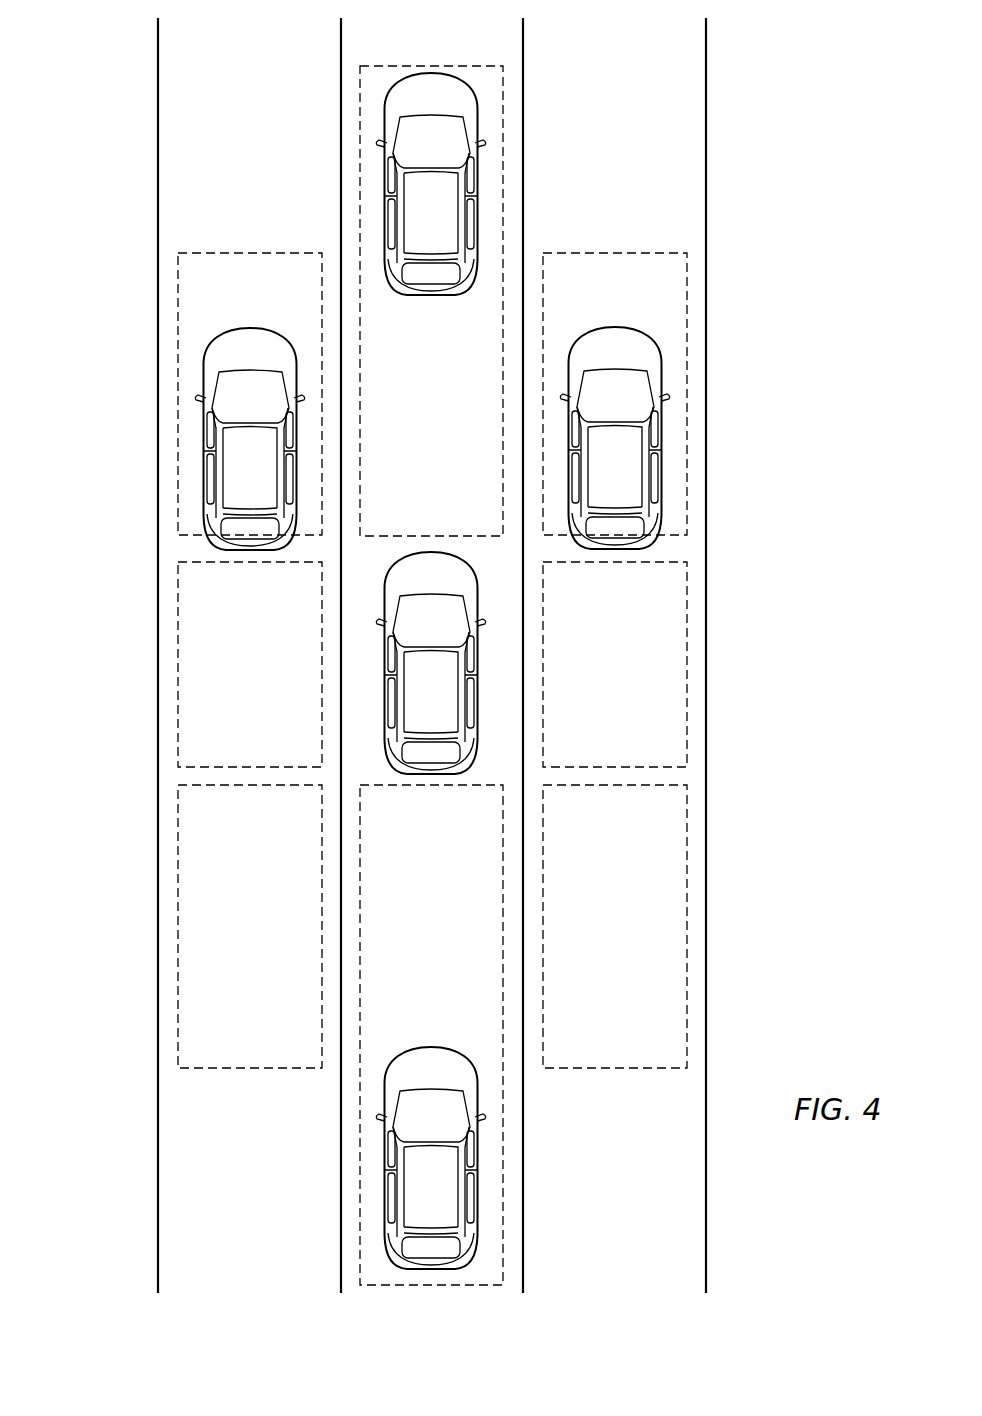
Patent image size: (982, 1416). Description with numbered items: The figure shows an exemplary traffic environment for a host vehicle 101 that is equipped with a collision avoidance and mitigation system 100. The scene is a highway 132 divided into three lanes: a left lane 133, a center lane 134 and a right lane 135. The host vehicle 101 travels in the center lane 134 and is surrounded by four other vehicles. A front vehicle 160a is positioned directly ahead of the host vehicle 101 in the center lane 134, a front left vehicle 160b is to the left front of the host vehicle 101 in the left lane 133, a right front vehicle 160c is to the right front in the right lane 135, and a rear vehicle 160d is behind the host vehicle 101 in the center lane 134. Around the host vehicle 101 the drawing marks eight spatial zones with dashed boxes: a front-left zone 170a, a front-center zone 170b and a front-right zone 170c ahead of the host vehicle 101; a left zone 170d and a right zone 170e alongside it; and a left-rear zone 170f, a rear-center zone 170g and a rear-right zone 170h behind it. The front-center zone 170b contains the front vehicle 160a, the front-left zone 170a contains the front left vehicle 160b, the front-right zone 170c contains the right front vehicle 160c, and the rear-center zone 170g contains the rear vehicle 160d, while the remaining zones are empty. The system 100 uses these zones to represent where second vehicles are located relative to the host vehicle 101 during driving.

The collision avoidance and mitigation system 100 is at (805, 50).
The host vehicle 101 is at (430, 663).
The highway 132 is at (138, 107).
The left lane 133 is at (249, 655).
The center lane 134 is at (432, 655).
The right lane 135 is at (614, 655).
The front vehicle 160a is at (430, 184).
The front left vehicle 160b is at (249, 439).
The right front vehicle 160c is at (614, 438).
The rear vehicle 160d is at (430, 1158).
The front-left zone 170a is at (250, 394).
The front-center zone 170b is at (431, 301).
The front-right zone 170c is at (615, 394).
The left zone 170d is at (250, 664).
The right zone 170e is at (615, 664).
The left-rear zone 170f is at (250, 926).
The rear-center zone 170g is at (431, 1035).
The rear-right zone 170h is at (615, 926).